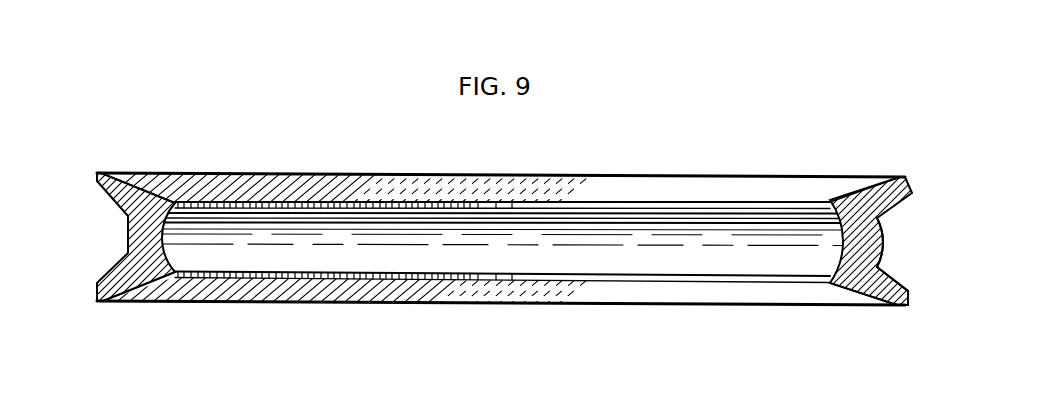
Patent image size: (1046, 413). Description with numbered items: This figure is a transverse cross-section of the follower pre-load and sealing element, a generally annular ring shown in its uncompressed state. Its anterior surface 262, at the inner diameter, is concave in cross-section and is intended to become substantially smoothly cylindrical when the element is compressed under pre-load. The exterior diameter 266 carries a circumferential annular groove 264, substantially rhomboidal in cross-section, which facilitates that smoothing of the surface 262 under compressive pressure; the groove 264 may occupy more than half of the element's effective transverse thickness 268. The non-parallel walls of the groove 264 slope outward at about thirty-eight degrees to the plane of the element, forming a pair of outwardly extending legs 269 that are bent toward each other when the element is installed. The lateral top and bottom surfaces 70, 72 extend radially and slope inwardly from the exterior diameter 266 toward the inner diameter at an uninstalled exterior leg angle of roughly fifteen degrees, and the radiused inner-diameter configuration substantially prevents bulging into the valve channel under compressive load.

The lateral top surface 70 is at (527, 173).
The lateral bottom surface 72 is at (475, 305).
The anterior surface 262 is at (183, 225).
The annular shaped groove 264 is at (881, 234).
The exterior diameter 266 is at (910, 178).
The transverse thickness 268 is at (890, 302).
The outwardly extending legs 269 is at (102, 172).